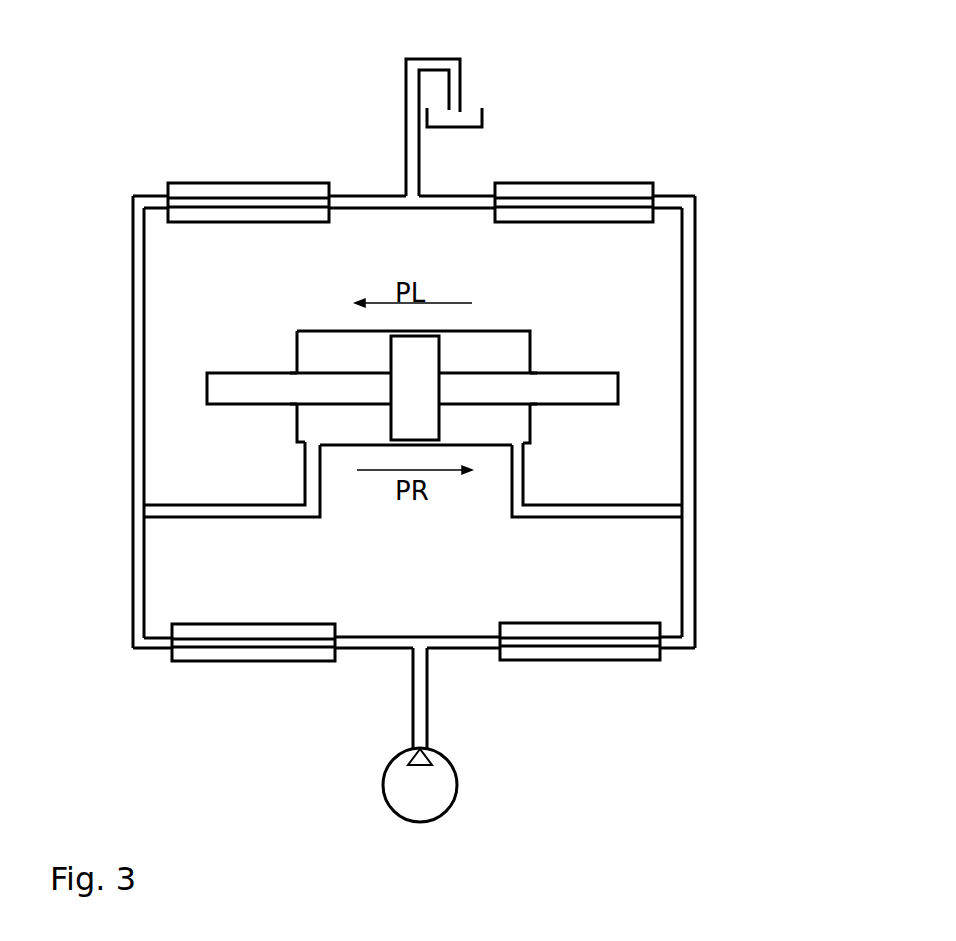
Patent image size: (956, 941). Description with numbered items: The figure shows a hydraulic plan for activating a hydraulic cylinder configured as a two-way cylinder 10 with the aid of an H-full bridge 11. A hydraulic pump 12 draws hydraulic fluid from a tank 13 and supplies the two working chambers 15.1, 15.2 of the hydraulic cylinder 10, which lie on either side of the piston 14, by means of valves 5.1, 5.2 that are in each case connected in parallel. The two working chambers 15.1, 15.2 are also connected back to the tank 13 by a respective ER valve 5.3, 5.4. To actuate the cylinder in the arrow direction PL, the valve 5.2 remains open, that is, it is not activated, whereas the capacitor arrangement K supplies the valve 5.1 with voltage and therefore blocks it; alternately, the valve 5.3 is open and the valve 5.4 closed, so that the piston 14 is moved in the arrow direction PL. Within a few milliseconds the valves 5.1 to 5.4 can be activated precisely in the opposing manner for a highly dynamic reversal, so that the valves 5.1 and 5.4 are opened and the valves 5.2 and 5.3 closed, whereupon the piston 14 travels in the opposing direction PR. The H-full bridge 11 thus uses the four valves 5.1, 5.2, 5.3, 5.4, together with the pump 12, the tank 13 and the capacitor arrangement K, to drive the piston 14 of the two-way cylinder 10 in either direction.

The valve 5.1 is at (253, 660).
The valve 5.2 is at (580, 658).
The ER valve 5.3 is at (248, 187).
The ER valve 5.4 is at (574, 187).
The two-way cylinder 10 is at (446, 412).
The H-full bridge 11 is at (708, 192).
The hydraulic pump 12 is at (447, 785).
The tank 13 is at (482, 118).
The piston 14 is at (430, 427).
The working chamber 15.1 is at (305, 357).
The working chamber 15.2 is at (512, 355).
The capacitor arrangement K is at (203, 178).